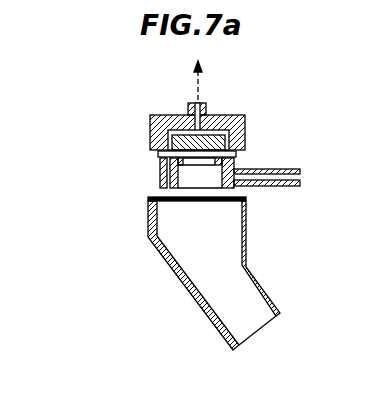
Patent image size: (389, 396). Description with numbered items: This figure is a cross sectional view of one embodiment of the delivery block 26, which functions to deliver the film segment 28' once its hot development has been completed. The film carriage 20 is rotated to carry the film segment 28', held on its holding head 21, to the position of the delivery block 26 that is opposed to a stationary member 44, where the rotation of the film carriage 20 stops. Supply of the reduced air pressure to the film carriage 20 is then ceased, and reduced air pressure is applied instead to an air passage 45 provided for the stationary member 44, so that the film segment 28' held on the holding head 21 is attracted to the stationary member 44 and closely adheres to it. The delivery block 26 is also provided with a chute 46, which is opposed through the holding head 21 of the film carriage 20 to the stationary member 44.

The delivery block 26 is at (151, 114).
The stationary member 44 is at (245, 118).
The air passage 45 is at (245, 138).
The film segment 28' is at (160, 161).
The holding head 21 is at (160, 184).
The film carriage 20 is at (283, 187).
The chute 46 is at (247, 240).